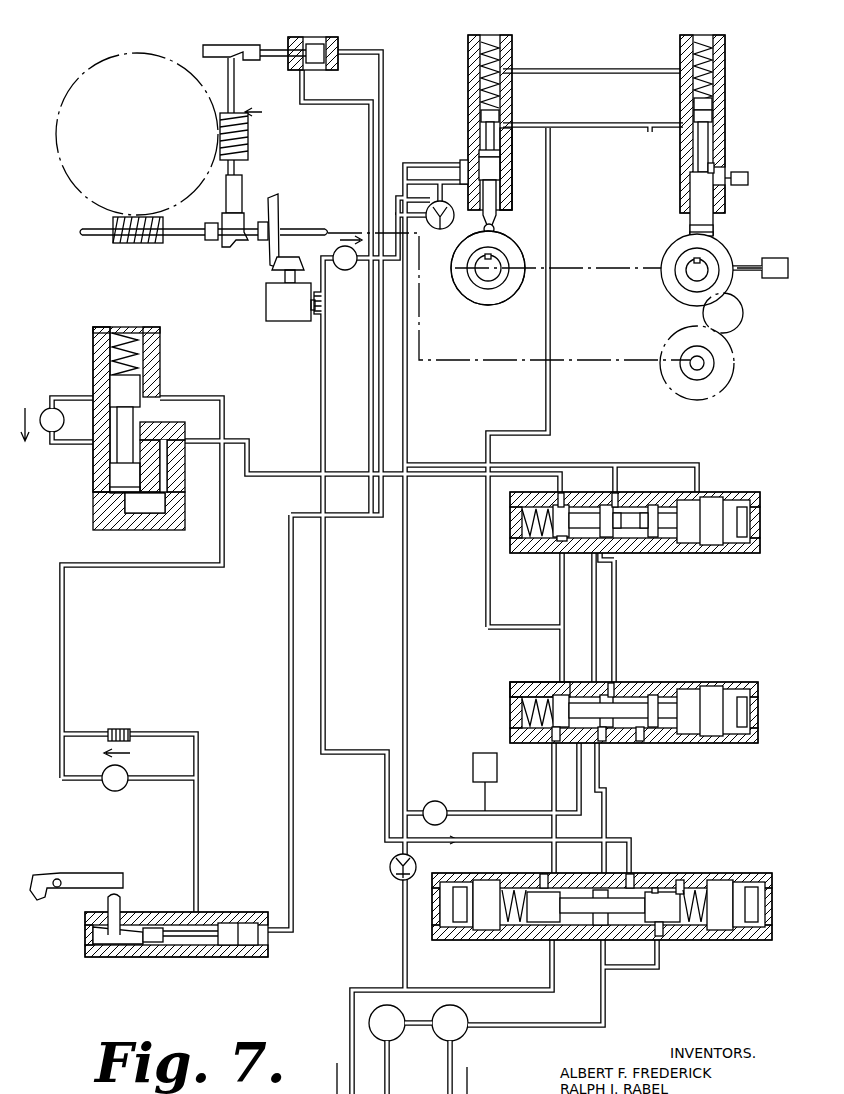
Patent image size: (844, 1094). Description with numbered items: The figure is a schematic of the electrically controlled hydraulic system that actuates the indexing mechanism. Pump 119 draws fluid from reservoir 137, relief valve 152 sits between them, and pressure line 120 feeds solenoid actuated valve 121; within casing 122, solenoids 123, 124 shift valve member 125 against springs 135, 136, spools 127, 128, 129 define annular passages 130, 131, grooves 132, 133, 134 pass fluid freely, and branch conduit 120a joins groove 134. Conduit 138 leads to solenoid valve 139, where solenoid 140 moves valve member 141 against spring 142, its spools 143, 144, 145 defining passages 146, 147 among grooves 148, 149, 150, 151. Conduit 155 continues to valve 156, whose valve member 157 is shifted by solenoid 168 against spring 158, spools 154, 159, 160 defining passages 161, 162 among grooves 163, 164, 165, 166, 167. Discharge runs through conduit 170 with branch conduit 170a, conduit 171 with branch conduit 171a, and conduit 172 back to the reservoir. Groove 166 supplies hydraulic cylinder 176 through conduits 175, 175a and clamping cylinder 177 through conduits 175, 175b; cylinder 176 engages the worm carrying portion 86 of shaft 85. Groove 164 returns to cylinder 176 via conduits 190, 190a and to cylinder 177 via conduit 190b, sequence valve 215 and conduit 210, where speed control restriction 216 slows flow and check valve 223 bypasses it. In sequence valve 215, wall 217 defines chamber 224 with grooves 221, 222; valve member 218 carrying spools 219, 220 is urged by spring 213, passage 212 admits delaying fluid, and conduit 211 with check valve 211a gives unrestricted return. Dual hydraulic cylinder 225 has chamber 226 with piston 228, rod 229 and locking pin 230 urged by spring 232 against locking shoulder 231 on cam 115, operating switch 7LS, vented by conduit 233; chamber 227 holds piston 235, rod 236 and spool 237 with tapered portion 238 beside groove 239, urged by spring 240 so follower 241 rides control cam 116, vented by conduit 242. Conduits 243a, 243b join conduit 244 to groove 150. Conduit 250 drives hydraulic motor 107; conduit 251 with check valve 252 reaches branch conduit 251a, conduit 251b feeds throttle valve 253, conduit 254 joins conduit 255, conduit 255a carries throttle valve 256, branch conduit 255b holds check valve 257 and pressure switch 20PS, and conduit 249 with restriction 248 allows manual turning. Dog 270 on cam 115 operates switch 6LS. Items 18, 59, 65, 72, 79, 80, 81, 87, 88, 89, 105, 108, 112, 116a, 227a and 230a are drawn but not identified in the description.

The wheel 18 is at (93, 64).
The pedal lever 59 is at (82, 874).
The shaft 65 is at (703, 368).
The spring 72 is at (140, 244).
The disc 79 is at (278, 215).
The collar 80 is at (220, 243).
The pulley 81 is at (733, 358).
The shaft 85 is at (265, 111).
The worm carrying portion 86 is at (236, 87).
The spring 87 is at (249, 133).
The block 88 is at (243, 180).
The bracket 89 is at (240, 215).
The wedge 105 is at (280, 272).
The hydraulic motor 107 is at (266, 313).
The idler 108 is at (743, 313).
The shaft 112 is at (492, 280).
The cam 115 is at (670, 295).
The control cam 116 is at (482, 300).
The pulley flange 116a is at (470, 240).
The pump 119 is at (460, 1038).
The pressure line 120 is at (604, 1004).
The branch conduit 120a is at (650, 968).
The solenoid actuated valve 121 is at (752, 948).
The casing 122 is at (455, 928).
The solenoid 123 is at (485, 930).
The solenoid 124 is at (722, 882).
The slidable valve member 125 is at (678, 880).
The spool 127 is at (538, 922).
The spool 128 is at (655, 922).
The spool 129 is at (690, 930).
The annular passage 130 is at (600, 925).
The annular passage 131 is at (655, 887).
The circular internal groove 132 is at (545, 882).
The circular internal groove 133 is at (630, 874).
The circular internal groove 134 is at (660, 935).
The spring 135 is at (510, 888).
The spring 136 is at (700, 895).
The reservoir 137 is at (467, 1080).
The conduit 138 is at (604, 795).
The solenoid valve 139 is at (746, 750).
The solenoid 140 is at (732, 690).
The valve member 141 is at (690, 720).
The spring 142 is at (520, 703).
The spool 143 is at (558, 728).
The spool 144 is at (600, 745).
The spool 145 is at (712, 690).
The annular passage 146 is at (554, 800).
The annular passage 147 is at (635, 700).
The circular internal groove 148 is at (552, 690).
The circular internal groove 149 is at (612, 682).
The circular internal groove 150 is at (610, 690).
The circular internal groove 151 is at (655, 728).
The relief valve 152 is at (378, 1006).
The spool 154 is at (561, 493).
The conduit 155 is at (645, 540).
The valve 156 is at (748, 557).
The valve member 157 is at (690, 528).
The spring 158 is at (520, 517).
The spool 159 is at (616, 493).
The spool 160 is at (682, 500).
The annular passage 161 is at (604, 505).
The annular passage 162 is at (652, 505).
The circular internal groove 163 is at (555, 540).
The circular internal groove 164 is at (562, 541).
The circular internal groove 165 is at (606, 553).
The circular internal groove 166 is at (618, 540).
The circular internal groove 167 is at (680, 557).
The solenoid 168 is at (712, 500).
The conduit 170 is at (558, 633).
The branch conduit 170a is at (594, 600).
The conduit 171 is at (553, 780).
The branch conduit 171a is at (640, 745).
The conduit 172 is at (492, 990).
The conduit 175 is at (420, 465).
The conduit 175a is at (384, 96).
The conduit 175b is at (291, 578).
The hydraulic cylinder 176 is at (325, 44).
The hydraulic cylinder 177 is at (175, 958).
The conduit 190 is at (420, 477).
The conduit 190a is at (371, 132).
The conduit 190b is at (200, 441).
The conduit 210 is at (175, 398).
The conduit 211 is at (52, 398).
The check valve 211a is at (66, 442).
The passage 212 is at (185, 500).
The spring 213 is at (128, 340).
The sequence valve 215 is at (75, 328).
The speed control restriction 216 is at (130, 732).
The wall 217 is at (100, 330).
The valve member 218 is at (130, 420).
The spool 219 is at (118, 385).
The spool 220 is at (118, 495).
The circular internal groove 221 is at (150, 395).
The circular internal groove 222 is at (115, 455).
The check valve 223 is at (126, 772).
The chamber 224 is at (118, 488).
The dual hydraulic cylinder 225 is at (482, 36).
The chamber 226 is at (714, 60).
The chamber 227 is at (512, 58).
The cylinder wall 227a is at (498, 208).
The piston 228 is at (694, 116).
The rod 229 is at (715, 172).
The locking pin 230 is at (714, 200).
The plunger foot 230a is at (700, 200).
The locking shoulder 231 is at (688, 236).
The spring 232 is at (694, 101).
The conduit 233 is at (725, 76).
The piston 235 is at (500, 112).
The rod 236 is at (500, 152).
The spool 237 is at (500, 165).
The tapered portion 238 is at (497, 188).
The groove 239 is at (468, 168).
The spring 240 is at (468, 66).
The follower 241 is at (495, 228).
The conduit 242 is at (545, 71).
The conduit 243a is at (652, 134).
The conduit 243b is at (528, 125).
The conduit 244 is at (550, 254).
The restriction 248 is at (324, 310).
The conduit 249 is at (330, 282).
The conduit 250 is at (629, 860).
The conduit 251 is at (398, 226).
The branch conduit 251a is at (410, 165).
The conduit 251b is at (398, 208).
The check valve 252 is at (334, 254).
The throttle valve 253 is at (440, 229).
The conduit 254 is at (405, 182).
The conduit 255 is at (405, 168).
The conduit 255a is at (403, 937).
The branch conduit 255b is at (488, 800).
The throttle valve 256 is at (390, 868).
The check valve 257 is at (435, 801).
The dog 270 is at (705, 265).
The switch 6LS is at (776, 258).
The switch 7LS is at (749, 178).
The pressure switch 20PS is at (483, 753).